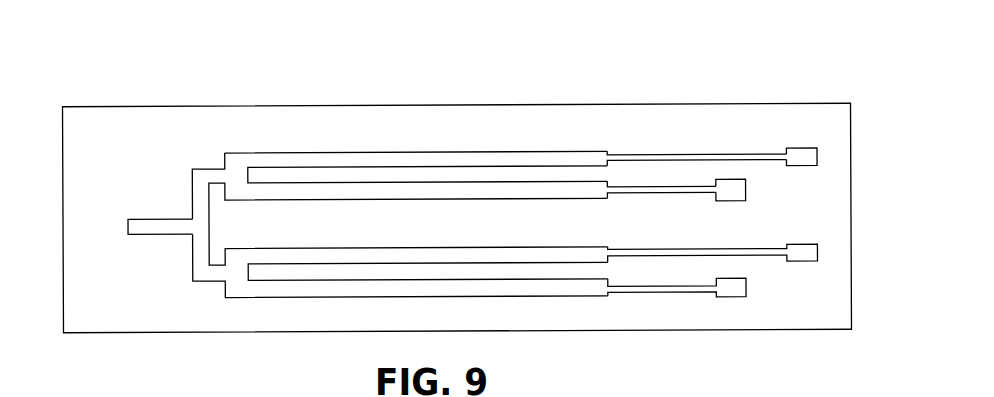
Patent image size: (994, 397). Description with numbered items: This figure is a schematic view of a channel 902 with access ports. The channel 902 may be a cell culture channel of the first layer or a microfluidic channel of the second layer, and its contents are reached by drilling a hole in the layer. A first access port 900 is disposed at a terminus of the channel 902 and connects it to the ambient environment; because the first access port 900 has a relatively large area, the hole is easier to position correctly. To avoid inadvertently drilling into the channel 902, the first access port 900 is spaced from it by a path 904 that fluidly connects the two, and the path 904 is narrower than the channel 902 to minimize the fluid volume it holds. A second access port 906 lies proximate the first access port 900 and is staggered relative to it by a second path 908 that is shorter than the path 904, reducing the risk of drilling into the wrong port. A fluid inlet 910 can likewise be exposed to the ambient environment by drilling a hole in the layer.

The first access port 900 is at (802, 152).
The channel 902 is at (435, 160).
The path 904 is at (690, 161).
The second access port 906 is at (728, 192).
The second path 908 is at (668, 193).
The fluid inlet 910 is at (162, 228).